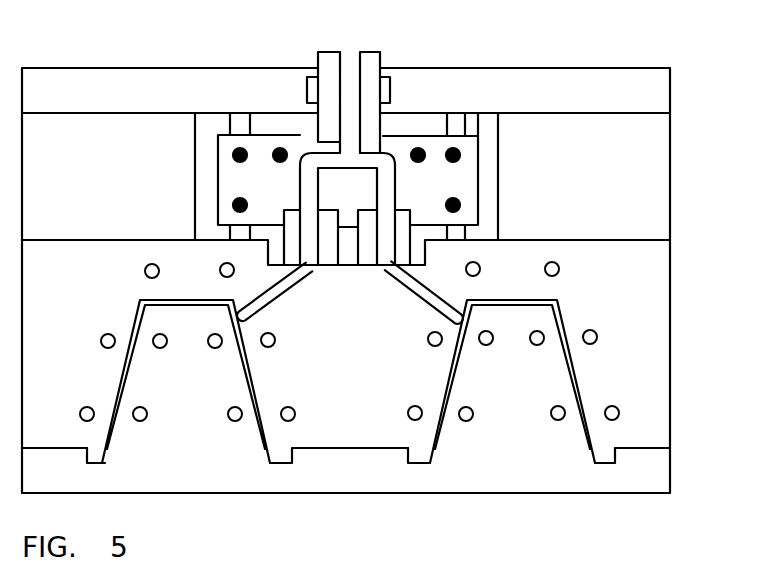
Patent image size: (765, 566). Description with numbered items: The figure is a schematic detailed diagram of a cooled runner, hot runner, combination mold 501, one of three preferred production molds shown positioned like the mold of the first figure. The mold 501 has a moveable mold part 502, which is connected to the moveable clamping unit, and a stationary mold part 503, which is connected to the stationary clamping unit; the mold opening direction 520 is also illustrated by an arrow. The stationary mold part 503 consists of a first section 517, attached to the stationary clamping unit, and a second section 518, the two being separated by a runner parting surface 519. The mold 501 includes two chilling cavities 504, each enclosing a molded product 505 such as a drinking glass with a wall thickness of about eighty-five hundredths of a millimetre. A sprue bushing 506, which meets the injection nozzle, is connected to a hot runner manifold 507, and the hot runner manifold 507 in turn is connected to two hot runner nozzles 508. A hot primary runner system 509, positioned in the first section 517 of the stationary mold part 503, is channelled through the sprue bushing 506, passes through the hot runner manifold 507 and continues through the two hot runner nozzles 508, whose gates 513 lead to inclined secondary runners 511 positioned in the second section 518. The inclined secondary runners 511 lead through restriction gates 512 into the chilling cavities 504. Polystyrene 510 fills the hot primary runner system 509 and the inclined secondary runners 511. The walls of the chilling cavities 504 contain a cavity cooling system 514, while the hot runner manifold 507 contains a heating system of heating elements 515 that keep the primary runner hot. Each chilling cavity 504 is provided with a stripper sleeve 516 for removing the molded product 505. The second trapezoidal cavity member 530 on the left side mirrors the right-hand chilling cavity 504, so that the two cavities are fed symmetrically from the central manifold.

The cooled runner, hot runner, combination mold 501 is at (670, 417).
The moveable mold part 502 is at (670, 478).
The stationary mold part 503 is at (670, 215).
The chilling cavity 504 is at (562, 318).
The molded product 505 is at (580, 377).
The sprue bushing 506 is at (368, 63).
The hot runner manifold 507 is at (468, 143).
The hot runner nozzle 508 is at (400, 217).
The hot primary runner system 509 is at (362, 152).
The polystyrene 510 is at (352, 78).
The inclined secondary runner 511 is at (432, 283).
The restriction gate 512 is at (460, 322).
The gate 513 is at (387, 263).
The cavity cooling system 514 is at (555, 419).
The heating elements 515 is at (460, 204).
The stripper sleeve 516 is at (605, 465).
The first section 517 is at (670, 134).
The second section 518 is at (670, 295).
The runner parting surface 519 is at (613, 238).
The mold opening direction 520 is at (66, 207).
The left trapezoidal spring member 530 is at (355, 452).